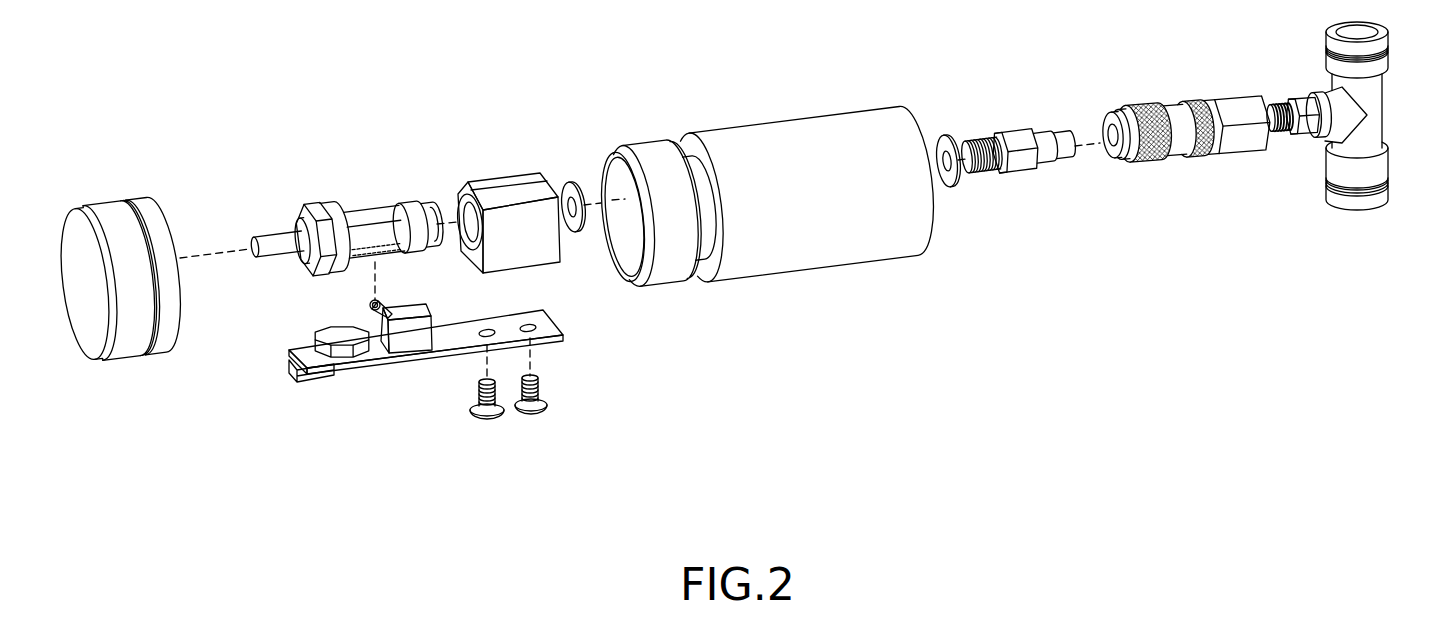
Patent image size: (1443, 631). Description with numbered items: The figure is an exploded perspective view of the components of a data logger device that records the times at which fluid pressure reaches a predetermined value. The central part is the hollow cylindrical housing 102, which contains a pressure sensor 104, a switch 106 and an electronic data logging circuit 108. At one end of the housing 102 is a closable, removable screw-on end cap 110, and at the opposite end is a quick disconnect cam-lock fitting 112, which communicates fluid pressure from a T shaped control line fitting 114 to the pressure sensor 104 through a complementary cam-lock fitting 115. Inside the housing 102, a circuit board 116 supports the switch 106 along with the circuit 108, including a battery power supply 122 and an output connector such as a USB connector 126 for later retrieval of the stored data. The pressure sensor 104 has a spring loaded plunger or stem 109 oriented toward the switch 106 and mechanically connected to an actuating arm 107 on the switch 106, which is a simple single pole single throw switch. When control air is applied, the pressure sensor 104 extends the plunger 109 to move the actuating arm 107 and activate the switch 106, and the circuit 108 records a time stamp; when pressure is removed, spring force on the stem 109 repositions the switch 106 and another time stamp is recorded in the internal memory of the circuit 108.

The housing 102 is at (788, 120).
The pressure sensor 104 is at (362, 206).
The switch 106 is at (433, 313).
The actuating arm 107 is at (380, 304).
The electronic data logging circuit 108 is at (460, 338).
The plunger 109 is at (279, 242).
The end cap 110 is at (104, 212).
The cam-lock fitting 112 is at (1030, 128).
The T shaped control line fitting 114 is at (1417, 95).
The complementary cam-lock fitting 115 is at (1165, 103).
The circuit board 116 is at (540, 350).
The battery power supply 122 is at (337, 331).
The USB-3 connector 126 is at (306, 383).